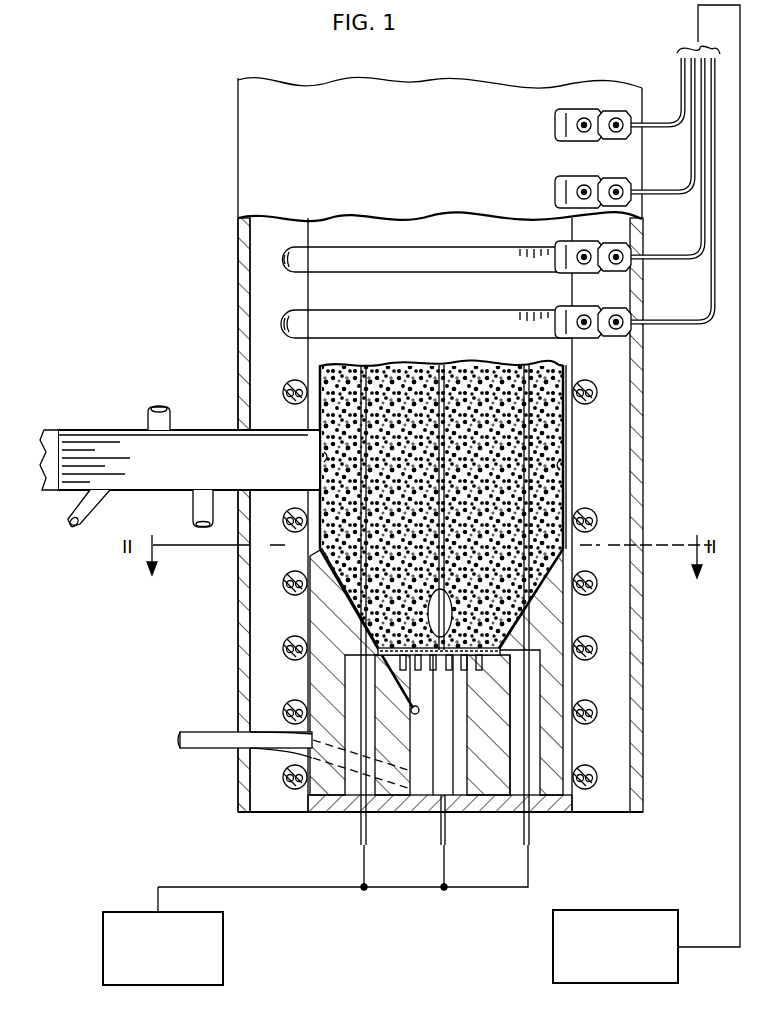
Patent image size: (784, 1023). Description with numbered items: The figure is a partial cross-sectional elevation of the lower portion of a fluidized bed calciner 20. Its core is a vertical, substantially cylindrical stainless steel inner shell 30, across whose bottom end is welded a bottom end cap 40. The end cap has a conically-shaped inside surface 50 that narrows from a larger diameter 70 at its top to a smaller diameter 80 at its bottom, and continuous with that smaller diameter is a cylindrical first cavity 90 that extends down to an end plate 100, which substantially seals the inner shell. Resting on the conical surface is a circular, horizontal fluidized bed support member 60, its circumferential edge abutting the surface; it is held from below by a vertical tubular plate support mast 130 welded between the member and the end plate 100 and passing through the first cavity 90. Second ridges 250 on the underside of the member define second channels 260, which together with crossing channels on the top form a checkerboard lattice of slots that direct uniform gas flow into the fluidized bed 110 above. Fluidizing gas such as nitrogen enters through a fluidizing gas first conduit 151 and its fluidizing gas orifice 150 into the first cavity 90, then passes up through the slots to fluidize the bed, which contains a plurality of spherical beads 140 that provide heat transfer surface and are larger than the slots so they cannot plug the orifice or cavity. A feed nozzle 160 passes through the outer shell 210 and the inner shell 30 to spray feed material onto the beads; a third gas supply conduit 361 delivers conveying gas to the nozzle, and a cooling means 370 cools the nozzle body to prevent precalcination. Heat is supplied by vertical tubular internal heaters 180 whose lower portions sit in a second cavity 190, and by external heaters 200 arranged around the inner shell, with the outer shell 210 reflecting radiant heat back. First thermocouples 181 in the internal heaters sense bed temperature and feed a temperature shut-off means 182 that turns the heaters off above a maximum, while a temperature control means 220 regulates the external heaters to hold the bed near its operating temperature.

The fluidized bed calciner 20 is at (230, 316).
The inner shell 30 is at (576, 452).
The bottom end cap 40 is at (565, 815).
The conically-shaped inside surface 50 is at (551, 588).
The fluidized bed support member 60 is at (375, 648).
The larger diameter 70 is at (320, 551).
The smaller diameter 80 is at (411, 710).
The first cavity 90 is at (466, 770).
The end plate 100 is at (318, 814).
The fluidized bed 110 is at (494, 503).
The plate support mast 130 is at (466, 814).
The spherical beads 140 is at (324, 454).
The fluidizing gas orifice 150 is at (430, 815).
The fluidizing gas first conduit 151 is at (200, 751).
The feed nozzle 160 is at (110, 418).
The internal heaters 180 is at (560, 446).
The first thermocouples 181 is at (364, 848).
The temperature shut-off means 182 is at (128, 910).
The second cavity 190 is at (355, 702).
The external heaters 200 is at (300, 310).
The outer shell 210 is at (645, 469).
The temperature control means 220 is at (614, 910).
The second ridges 250 is at (442, 672).
The second channels 260 is at (476, 668).
The third gas supply conduit 361 is at (88, 528).
The cooling means 370 is at (170, 412).